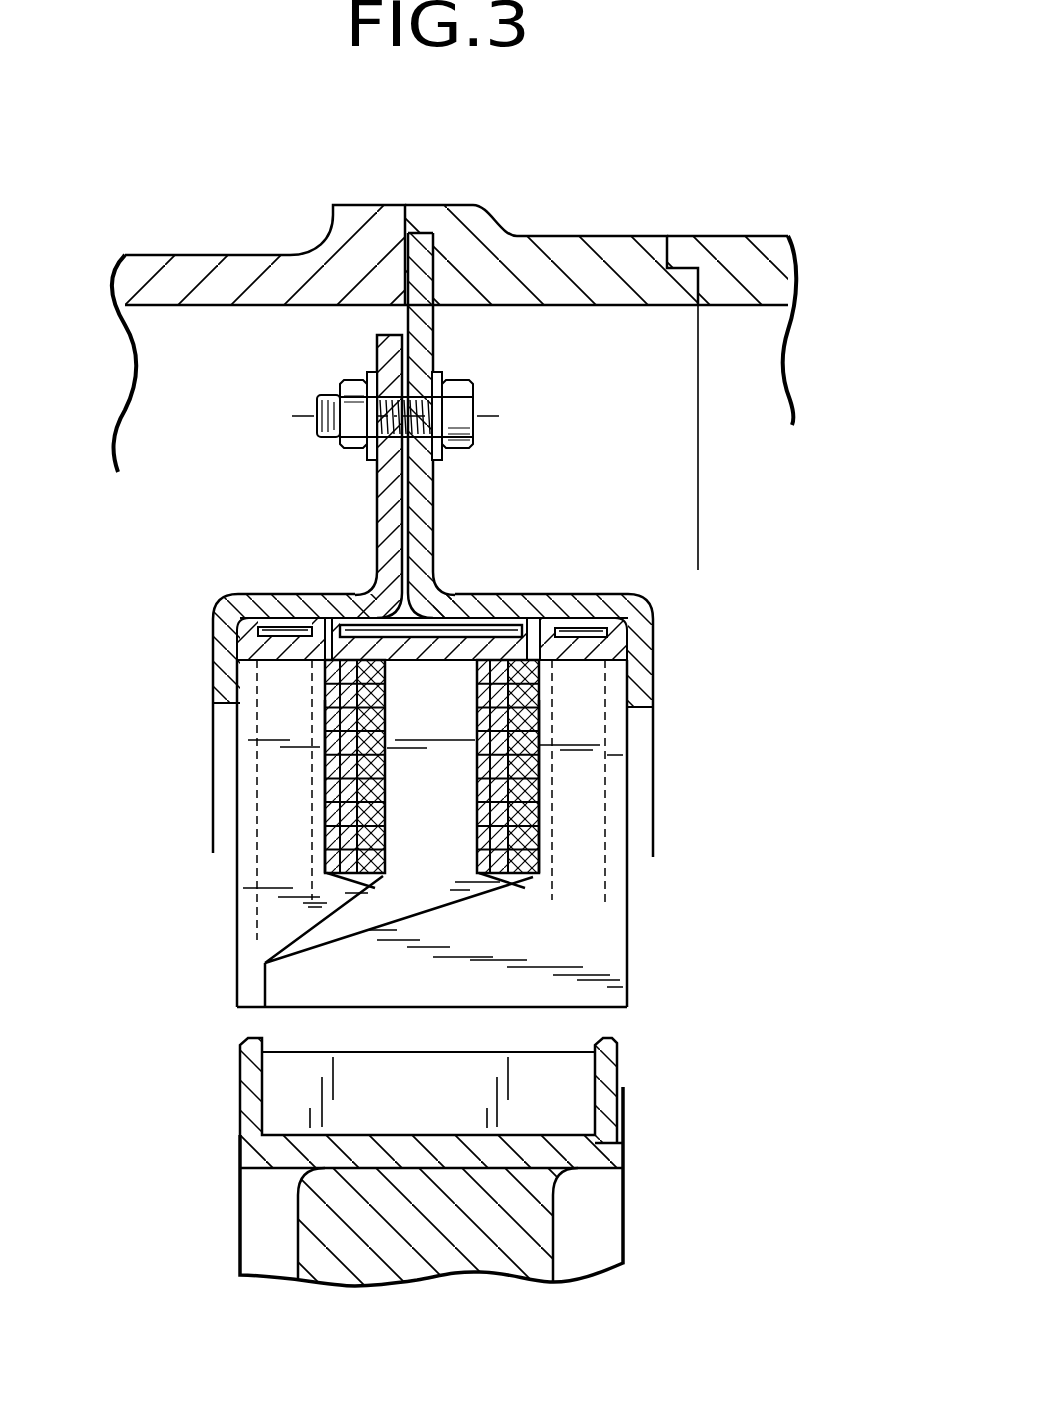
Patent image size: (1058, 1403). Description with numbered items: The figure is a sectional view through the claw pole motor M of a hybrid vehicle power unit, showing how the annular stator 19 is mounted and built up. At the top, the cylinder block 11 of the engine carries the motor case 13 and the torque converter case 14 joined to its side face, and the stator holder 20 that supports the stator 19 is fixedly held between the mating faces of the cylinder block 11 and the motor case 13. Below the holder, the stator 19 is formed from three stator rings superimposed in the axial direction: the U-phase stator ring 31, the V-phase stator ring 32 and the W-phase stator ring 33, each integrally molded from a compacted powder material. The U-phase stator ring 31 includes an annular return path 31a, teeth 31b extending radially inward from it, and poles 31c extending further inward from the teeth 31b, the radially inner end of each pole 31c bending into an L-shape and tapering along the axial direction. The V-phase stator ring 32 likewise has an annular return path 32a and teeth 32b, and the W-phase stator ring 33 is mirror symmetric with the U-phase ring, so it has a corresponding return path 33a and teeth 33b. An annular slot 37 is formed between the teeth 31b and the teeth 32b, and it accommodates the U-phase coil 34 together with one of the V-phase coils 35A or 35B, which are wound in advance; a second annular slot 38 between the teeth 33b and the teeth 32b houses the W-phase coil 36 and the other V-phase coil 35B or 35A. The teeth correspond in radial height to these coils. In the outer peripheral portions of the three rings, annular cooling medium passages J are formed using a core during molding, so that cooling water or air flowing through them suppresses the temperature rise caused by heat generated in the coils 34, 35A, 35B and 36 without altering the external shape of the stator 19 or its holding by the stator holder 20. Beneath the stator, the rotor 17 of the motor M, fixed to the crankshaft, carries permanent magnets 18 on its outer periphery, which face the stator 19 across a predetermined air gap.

The cylinder block 11 is at (249, 275).
The motor case 13 is at (553, 252).
The torque converter case 14 is at (727, 255).
The rotor 17 is at (664, 1172).
The permanent magnets 18 is at (290, 1090).
The stator 19 is at (202, 912).
The stator holder 20 is at (397, 545).
The U-phase stator ring 31 is at (567, 608).
The return path 31a is at (630, 650).
The teeth 31b is at (585, 842).
The poles 31c is at (513, 987).
The V-phase stator ring 32 is at (462, 608).
The return path 32a is at (537, 697).
The teeth 32b is at (433, 832).
The W-phase stator ring 33 is at (281, 608).
The return path 33a is at (250, 650).
The teeth 33b is at (270, 790).
The U-phase coil 34 is at (535, 732).
The V-phase coil 35A is at (430, 768).
The V-phase coil 35B is at (437, 710).
The W-phase coil 36 is at (322, 782).
The annular slot 37 is at (520, 877).
The annular slot 38 is at (325, 852).
The cooling medium passages J is at (299, 632).
The claw pole motor M is at (726, 686).